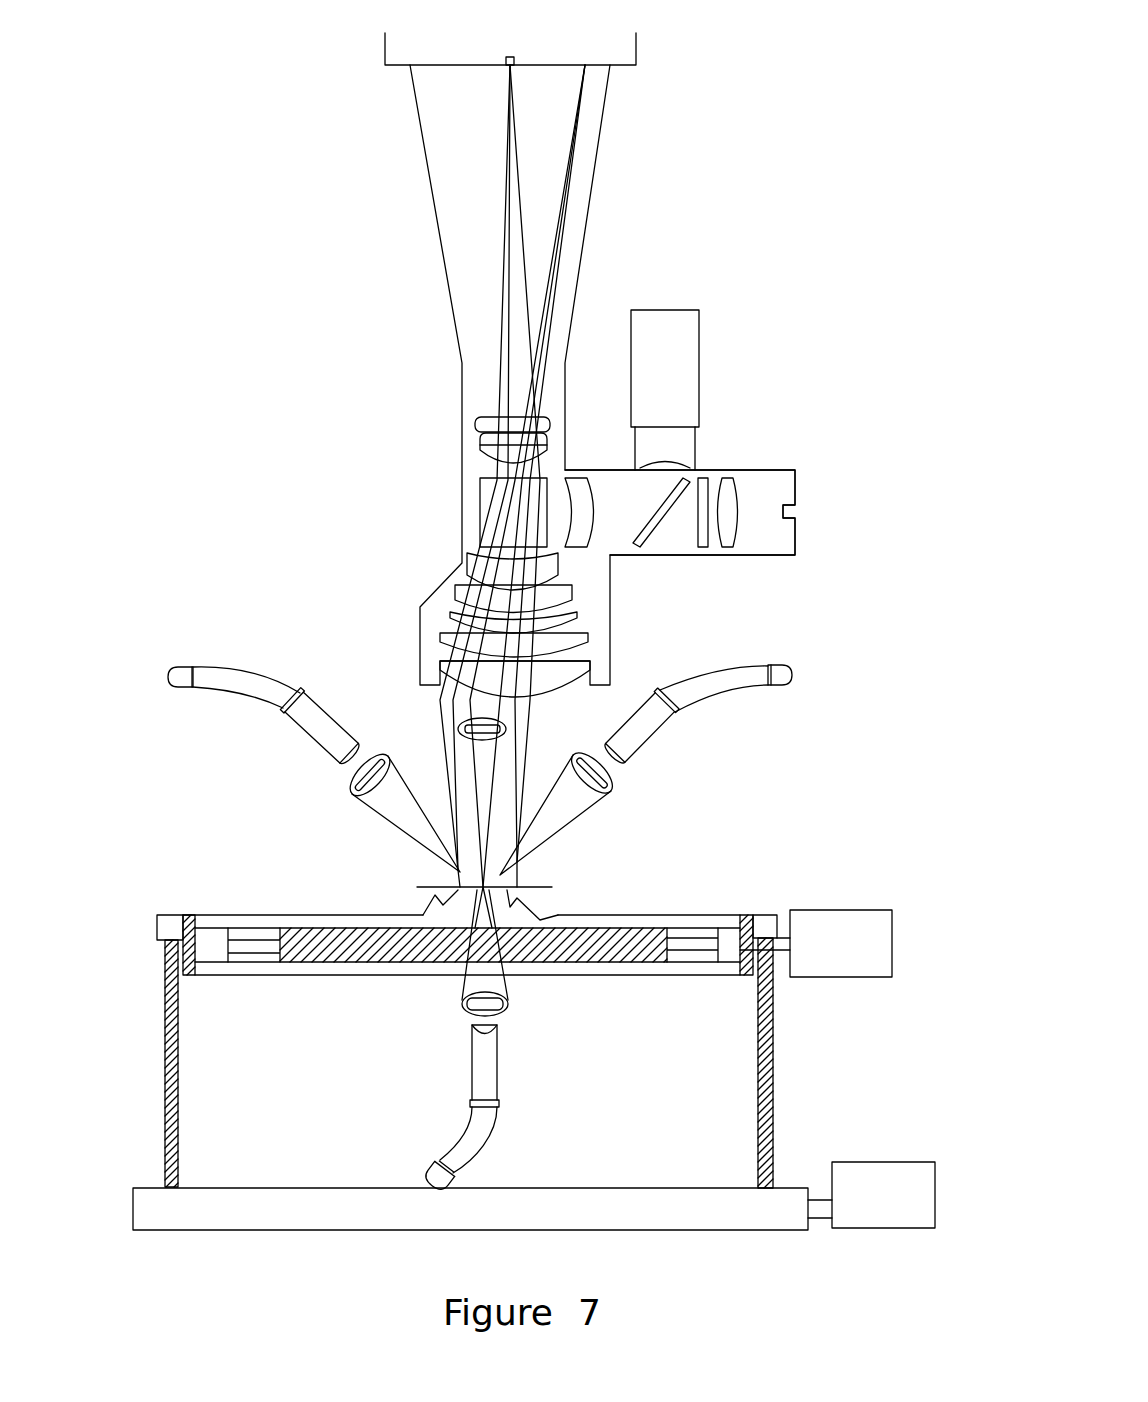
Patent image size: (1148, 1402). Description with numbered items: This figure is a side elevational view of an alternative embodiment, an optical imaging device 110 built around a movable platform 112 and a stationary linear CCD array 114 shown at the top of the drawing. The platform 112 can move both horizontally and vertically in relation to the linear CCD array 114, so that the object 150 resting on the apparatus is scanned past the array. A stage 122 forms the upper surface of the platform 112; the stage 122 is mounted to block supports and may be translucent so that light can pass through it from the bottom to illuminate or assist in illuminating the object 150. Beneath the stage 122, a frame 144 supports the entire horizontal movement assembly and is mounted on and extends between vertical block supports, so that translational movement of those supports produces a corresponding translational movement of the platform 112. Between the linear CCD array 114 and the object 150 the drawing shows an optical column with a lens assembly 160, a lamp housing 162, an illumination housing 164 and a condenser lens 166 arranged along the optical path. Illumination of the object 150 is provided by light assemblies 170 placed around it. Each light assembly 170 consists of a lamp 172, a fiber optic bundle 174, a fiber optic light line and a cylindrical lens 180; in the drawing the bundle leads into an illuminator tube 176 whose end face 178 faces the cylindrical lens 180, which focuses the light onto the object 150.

The optical imaging device 110 is at (743, 133).
The platform 112 is at (768, 912).
The linear CCD array 114 is at (512, 55).
The stage 122 is at (650, 933).
The frame 144 is at (752, 962).
The object 150 is at (522, 897).
The objective lens assembly 160 is at (573, 593).
The light source 162 is at (685, 328).
The illumination housing 164 is at (797, 496).
The condenser lens 166 is at (731, 490).
The light assembly 170 is at (273, 742).
The lamp 172 is at (793, 675).
The fiber optic bundle 174 is at (707, 688).
The illuminator tube 176 is at (652, 718).
The tube end face 178 is at (632, 753).
The cylindrical lens 180 is at (613, 792).